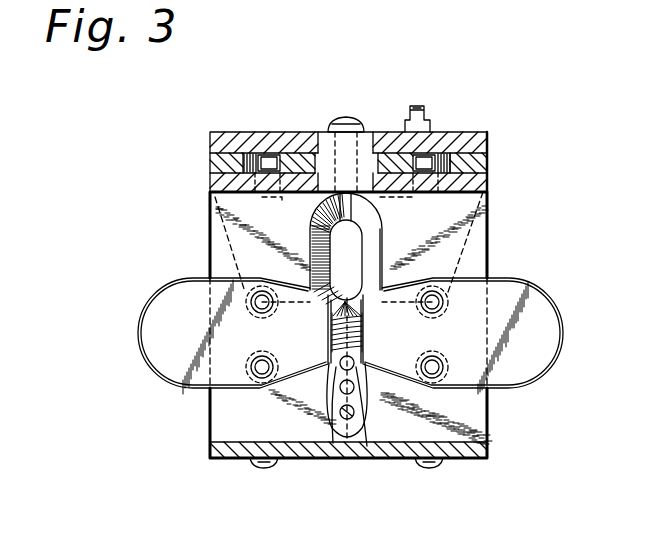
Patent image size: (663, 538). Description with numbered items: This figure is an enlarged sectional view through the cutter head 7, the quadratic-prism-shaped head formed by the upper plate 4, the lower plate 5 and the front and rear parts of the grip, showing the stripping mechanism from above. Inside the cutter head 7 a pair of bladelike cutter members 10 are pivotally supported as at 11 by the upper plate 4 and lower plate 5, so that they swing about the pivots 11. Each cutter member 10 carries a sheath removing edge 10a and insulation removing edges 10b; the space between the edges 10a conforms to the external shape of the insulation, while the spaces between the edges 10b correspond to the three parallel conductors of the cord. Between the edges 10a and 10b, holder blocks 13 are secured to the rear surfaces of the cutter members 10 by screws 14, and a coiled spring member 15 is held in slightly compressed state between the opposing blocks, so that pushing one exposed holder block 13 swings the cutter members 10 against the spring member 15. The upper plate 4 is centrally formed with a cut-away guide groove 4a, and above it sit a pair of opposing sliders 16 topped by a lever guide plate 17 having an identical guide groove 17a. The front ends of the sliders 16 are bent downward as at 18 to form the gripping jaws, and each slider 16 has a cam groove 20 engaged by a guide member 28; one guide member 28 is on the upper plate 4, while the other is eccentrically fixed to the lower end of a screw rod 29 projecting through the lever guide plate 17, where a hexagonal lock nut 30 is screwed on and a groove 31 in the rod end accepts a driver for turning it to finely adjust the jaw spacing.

The upper plate 4 is at (458, 195).
The guide groove 4a is at (370, 195).
The lower plate 5 is at (298, 448).
The cutter head 7 is at (243, 458).
The cutter member 10 is at (213, 265).
The sheath removing edge 10a is at (333, 291).
The insulation removing edge 10b is at (366, 440).
The pivot 11 is at (210, 192).
The holder block 13 is at (142, 326).
The screw 14 is at (250, 368).
The spring member 15 is at (333, 443).
The slider 16 is at (212, 165).
The lever guide plate 17 is at (215, 142).
The guide groove 17a is at (327, 142).
The bent front end 18 is at (227, 238).
The cam groove 20 is at (248, 153).
The guide member 28 is at (268, 157).
The screw rod 29 is at (433, 100).
The lock nut 30 is at (428, 157).
The groove 31 is at (414, 106).